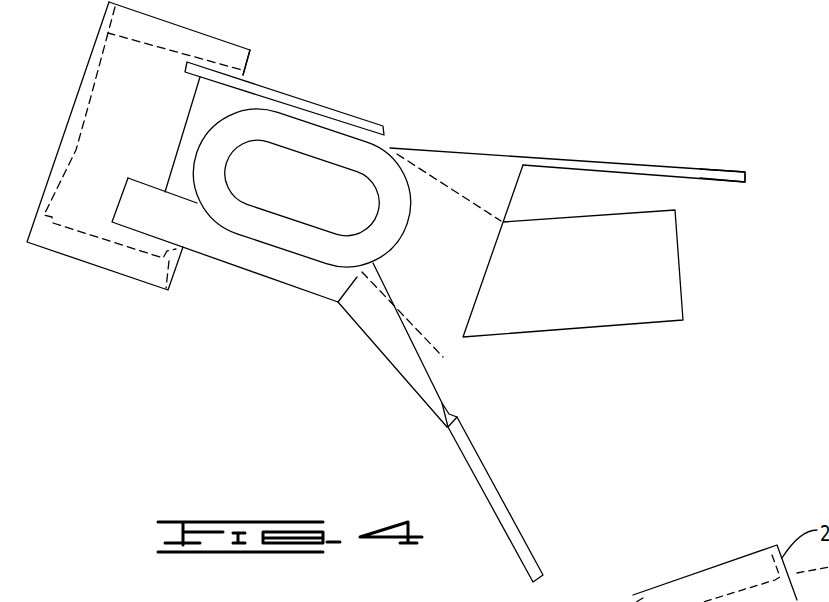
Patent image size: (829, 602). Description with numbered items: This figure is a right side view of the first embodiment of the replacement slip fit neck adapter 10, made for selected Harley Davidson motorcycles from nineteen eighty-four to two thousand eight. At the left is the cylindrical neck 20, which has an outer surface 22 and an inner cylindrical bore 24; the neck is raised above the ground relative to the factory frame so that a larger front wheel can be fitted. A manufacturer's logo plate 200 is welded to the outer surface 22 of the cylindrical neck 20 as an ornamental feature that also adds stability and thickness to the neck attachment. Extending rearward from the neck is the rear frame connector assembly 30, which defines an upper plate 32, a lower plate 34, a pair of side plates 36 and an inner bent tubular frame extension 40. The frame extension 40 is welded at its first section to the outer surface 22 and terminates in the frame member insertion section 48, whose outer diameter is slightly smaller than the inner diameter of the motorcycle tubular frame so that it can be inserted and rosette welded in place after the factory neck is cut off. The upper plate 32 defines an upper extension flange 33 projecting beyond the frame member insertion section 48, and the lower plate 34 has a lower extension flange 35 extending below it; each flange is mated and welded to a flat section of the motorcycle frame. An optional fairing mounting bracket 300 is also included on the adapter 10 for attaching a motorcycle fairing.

The replacement slip fit neck adapter 10 is at (586, 107).
The cylindrical neck 20 is at (97, 40).
The outer surface 22 is at (113, 98).
The inner cylindrical bore 24 is at (252, 54).
The manufacturer's logo plate 200 is at (288, 93).
The rear frame connector assembly 30 is at (466, 145).
The upper plate 32 is at (395, 148).
The upper extension flange 33 is at (680, 167).
The lower plate 34 is at (277, 272).
The lower extension flange 35 is at (507, 505).
The side plates 36 is at (412, 288).
The inner bent tubular frame extension 40 is at (438, 275).
The frame member insertion section 48 is at (680, 268).
The fairing mounting bracket 300 is at (544, 596).